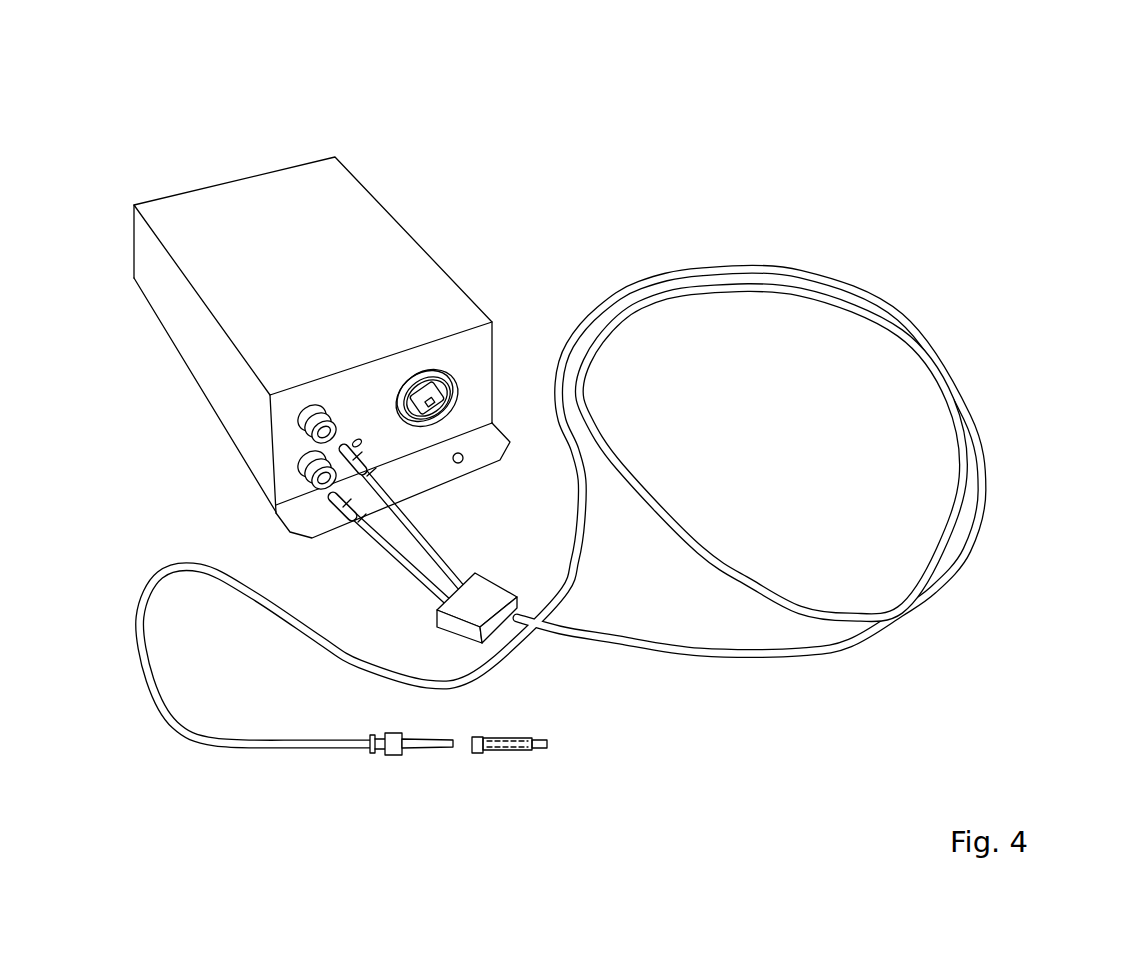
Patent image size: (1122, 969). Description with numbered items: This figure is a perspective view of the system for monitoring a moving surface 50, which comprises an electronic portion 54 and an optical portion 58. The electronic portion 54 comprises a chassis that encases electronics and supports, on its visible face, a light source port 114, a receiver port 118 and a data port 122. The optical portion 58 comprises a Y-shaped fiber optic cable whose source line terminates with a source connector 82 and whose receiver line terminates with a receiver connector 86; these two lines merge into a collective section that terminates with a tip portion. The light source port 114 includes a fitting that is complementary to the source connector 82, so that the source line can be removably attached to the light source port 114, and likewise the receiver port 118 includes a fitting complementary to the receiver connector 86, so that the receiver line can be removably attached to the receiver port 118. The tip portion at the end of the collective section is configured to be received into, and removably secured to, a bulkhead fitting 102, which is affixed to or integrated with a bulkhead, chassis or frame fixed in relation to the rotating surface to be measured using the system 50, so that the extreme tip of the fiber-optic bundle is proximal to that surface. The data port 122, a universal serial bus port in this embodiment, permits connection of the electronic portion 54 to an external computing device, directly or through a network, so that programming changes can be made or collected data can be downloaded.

The system for monitoring a moving surface 50 is at (975, 111).
The electronic portion 54 is at (358, 193).
The optical portion 58 is at (742, 664).
The source connector 82 is at (353, 457).
The receiver connector 86 is at (338, 505).
The bulkhead fitting 102 is at (497, 755).
The light source port 114 is at (313, 408).
The receiver port 118 is at (300, 475).
The data port 122 is at (462, 387).